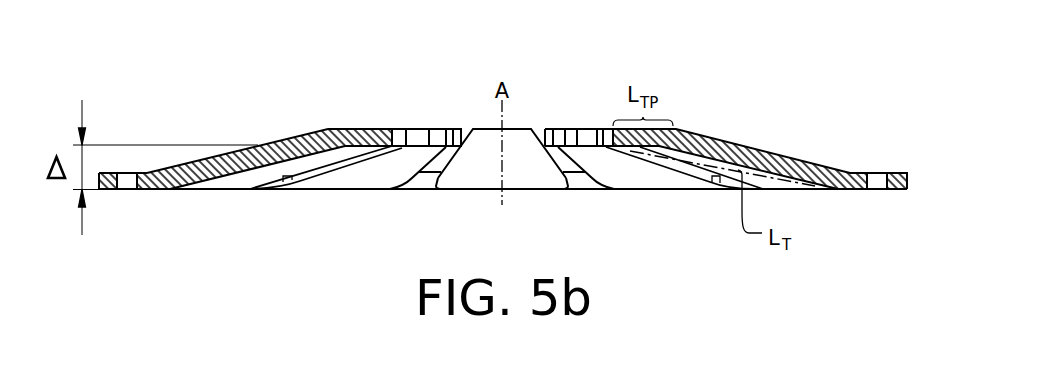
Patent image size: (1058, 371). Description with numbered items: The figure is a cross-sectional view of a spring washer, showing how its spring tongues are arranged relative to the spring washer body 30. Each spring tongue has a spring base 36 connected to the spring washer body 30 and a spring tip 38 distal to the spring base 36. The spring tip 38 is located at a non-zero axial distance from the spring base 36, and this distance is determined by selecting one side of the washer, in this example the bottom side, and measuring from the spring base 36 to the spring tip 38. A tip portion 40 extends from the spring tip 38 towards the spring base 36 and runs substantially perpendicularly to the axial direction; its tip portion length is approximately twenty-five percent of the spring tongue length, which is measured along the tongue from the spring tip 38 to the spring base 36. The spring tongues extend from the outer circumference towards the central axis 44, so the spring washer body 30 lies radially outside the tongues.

The spring washer body 30 is at (124, 205).
The spring base 36 is at (155, 205).
The spring tip 38 is at (597, 113).
The tip portion 40 is at (662, 150).
The central axis 44 is at (510, 200).